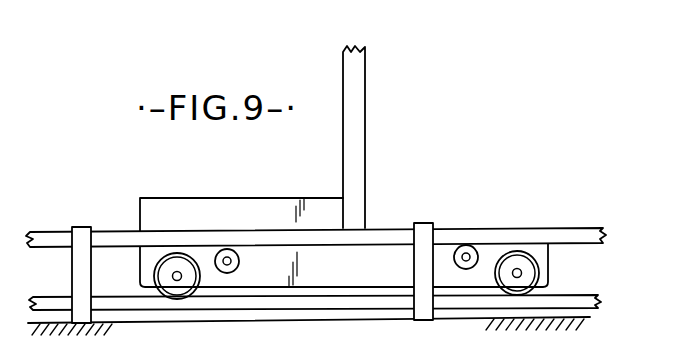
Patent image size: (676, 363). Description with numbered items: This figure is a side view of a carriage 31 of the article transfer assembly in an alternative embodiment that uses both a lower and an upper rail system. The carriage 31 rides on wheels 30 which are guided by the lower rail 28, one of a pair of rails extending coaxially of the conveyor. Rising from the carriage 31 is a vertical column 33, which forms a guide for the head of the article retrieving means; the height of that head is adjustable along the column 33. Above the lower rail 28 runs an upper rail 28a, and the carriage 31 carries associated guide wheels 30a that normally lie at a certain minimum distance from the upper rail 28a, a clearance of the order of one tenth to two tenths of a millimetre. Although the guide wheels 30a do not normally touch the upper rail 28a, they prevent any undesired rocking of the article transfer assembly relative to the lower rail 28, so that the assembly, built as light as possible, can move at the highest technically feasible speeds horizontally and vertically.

The carriage 31 is at (156, 198).
The upper rail 28a is at (188, 237).
The lower rail 28 is at (307, 303).
The wheels 30 is at (177, 287).
The guide wheels 30a is at (230, 249).
The vertical column 33 is at (351, 120).